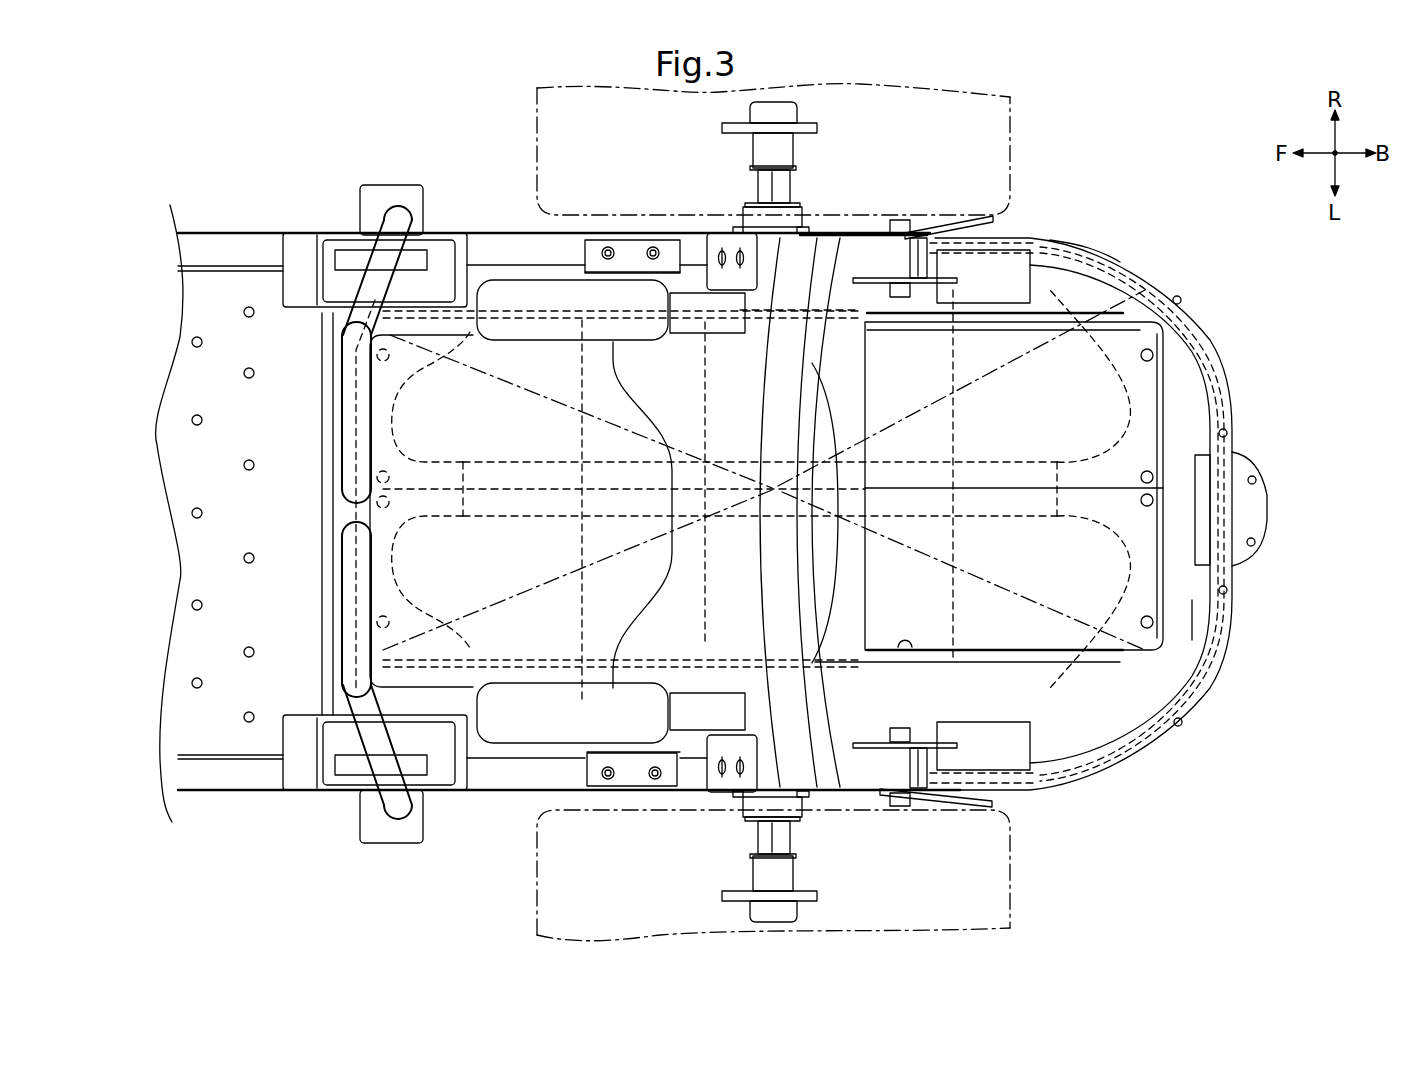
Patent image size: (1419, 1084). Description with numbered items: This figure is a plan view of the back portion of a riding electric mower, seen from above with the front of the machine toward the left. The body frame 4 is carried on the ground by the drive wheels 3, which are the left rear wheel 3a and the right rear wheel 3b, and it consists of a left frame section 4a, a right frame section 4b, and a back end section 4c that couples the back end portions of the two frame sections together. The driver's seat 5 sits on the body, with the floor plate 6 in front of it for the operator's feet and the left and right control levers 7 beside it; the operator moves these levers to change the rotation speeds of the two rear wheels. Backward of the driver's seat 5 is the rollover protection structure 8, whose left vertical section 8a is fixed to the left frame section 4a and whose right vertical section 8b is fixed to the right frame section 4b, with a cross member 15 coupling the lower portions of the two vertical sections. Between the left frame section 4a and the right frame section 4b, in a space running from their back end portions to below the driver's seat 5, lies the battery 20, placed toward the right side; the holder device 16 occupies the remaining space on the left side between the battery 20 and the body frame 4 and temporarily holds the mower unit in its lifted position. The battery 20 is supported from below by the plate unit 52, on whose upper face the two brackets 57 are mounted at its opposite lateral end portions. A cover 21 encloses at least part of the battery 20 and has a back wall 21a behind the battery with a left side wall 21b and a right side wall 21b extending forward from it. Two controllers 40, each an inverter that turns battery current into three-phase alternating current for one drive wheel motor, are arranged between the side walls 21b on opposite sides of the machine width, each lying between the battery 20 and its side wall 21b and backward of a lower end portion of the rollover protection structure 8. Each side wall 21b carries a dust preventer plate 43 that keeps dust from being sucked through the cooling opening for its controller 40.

The drive wheels 3 is at (697, 517).
The left rear wheel 3a is at (537, 912).
The right rear wheel 3b is at (537, 113).
The body frame 4 is at (528, 792).
The left frame section 4a is at (700, 780).
The right frame section 4b is at (702, 250).
The back end section 4c is at (1200, 600).
The driver's seat 5 is at (537, 357).
The floor plate 6 is at (218, 620).
The control levers 7 is at (363, 297).
The rollover protection structure (ROPS) 8 is at (785, 512).
The left vertical section 8a is at (812, 773).
The right vertical section 8b is at (812, 252).
The cross member 15 is at (847, 587).
The holder device 16 is at (558, 717).
The battery 20 is at (1240, 520).
The cover 21 is at (1130, 490).
The back wall 21a is at (1213, 400).
The side wall 21b is at (1047, 240).
The controllers 40 is at (993, 287).
The dust preventer plate 43 is at (972, 223).
The plate unit 52 is at (1100, 677).
The brackets 57 is at (1080, 250).